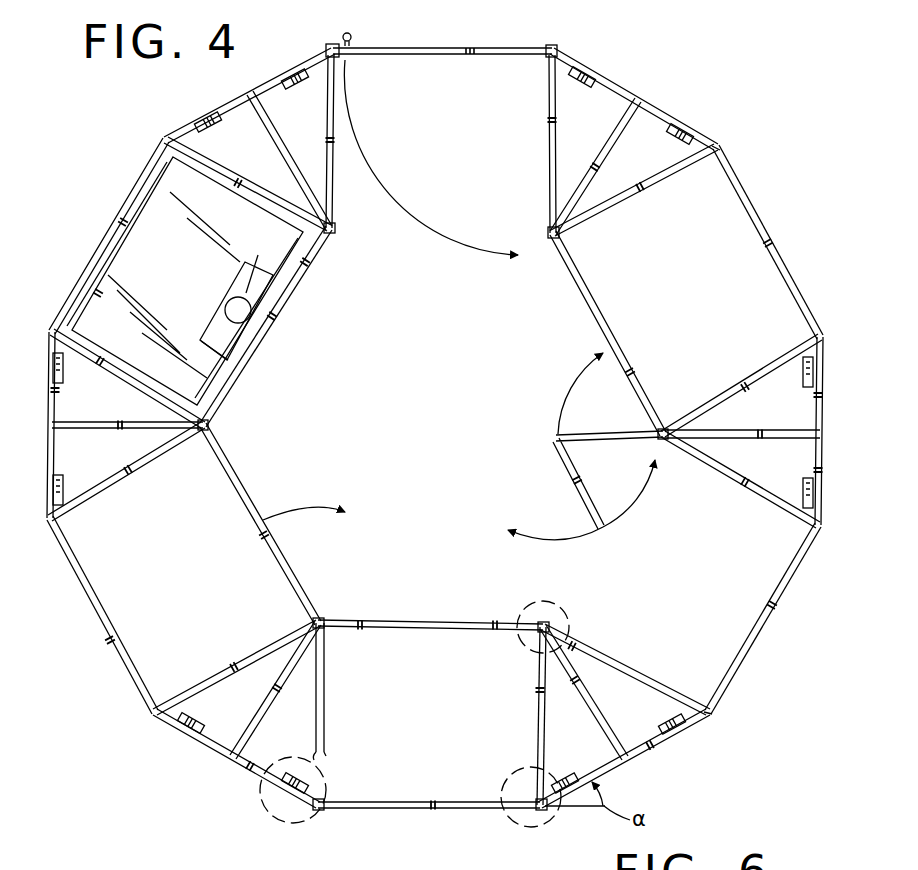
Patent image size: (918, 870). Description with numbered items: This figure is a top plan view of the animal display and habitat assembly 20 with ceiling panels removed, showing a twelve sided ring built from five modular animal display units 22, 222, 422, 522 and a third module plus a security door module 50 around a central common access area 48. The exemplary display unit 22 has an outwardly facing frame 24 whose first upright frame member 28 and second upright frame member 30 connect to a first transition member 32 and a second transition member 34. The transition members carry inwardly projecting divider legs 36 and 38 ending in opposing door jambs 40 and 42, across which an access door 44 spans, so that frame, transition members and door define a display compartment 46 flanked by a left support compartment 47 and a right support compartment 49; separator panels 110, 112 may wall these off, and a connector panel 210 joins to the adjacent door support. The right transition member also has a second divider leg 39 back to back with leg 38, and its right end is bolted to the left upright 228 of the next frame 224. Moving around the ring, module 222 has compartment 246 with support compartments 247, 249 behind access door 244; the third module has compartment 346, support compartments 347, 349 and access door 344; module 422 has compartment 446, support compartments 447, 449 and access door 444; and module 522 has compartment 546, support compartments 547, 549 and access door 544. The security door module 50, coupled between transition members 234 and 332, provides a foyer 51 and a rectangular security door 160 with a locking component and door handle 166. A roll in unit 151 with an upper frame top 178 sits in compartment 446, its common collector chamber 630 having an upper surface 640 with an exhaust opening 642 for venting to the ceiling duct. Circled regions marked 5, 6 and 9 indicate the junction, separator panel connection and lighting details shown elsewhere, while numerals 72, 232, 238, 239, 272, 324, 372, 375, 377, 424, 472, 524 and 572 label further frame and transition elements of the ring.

The animal display and habitat assembly 20 is at (716, 128).
The modular animal display unit 22 is at (422, 778).
The outwardly facing frame 24 is at (480, 810).
The first upright frame member 28 is at (322, 812).
The second upright frame member 30 is at (539, 815).
The first transition member 32 is at (228, 760).
The second transition member 34 is at (627, 768).
The inwardly extending divider leg 36 is at (300, 670).
The first divider leg 38 is at (606, 728).
The second divider leg 39 is at (605, 727).
The door jamb 40 is at (322, 618).
The door jamb 42 is at (538, 642).
The access door 44 is at (400, 620).
The display compartment 46 is at (426, 707).
The left support compartment 47 is at (304, 724).
The common access area 48 is at (434, 409).
The right support compartment 49 is at (553, 708).
The security door module 50 is at (442, 31).
The foyer 51 is at (474, 62).
The frame section 72 is at (360, 801).
The separator panel 110 is at (318, 751).
The separator panel 112 is at (538, 740).
The roll in unit 151 is at (205, 375).
The security door 160 is at (527, 46).
The locking component and door handle 166 is at (347, 30).
The upper frame top 178 is at (158, 233).
The connector panel 210 is at (583, 646).
The display module 222 is at (708, 652).
The frame 224 is at (770, 608).
The left upright 228 is at (711, 718).
The side frame section 232 is at (826, 348).
The transition member 234 is at (645, 95).
The cross strut 238 is at (752, 438).
The cross strut 239 is at (736, 428).
The access door 244 is at (564, 456).
The animal display compartment 246 is at (700, 572).
The left support compartment 247 is at (603, 667).
The right support compartment 249 is at (728, 456).
The frame section 272 is at (797, 558).
The frame section 324 is at (736, 168).
The transition member 332 is at (258, 86).
The access door 344 is at (592, 318).
The animal display compartment 346 is at (700, 305).
The left support compartment 347 is at (718, 392).
The right support compartment 349 is at (610, 188).
The frame section 372 is at (731, 190).
The strut member 375 is at (796, 372).
The bracket 377 is at (806, 365).
The display module 422 is at (82, 330).
The frame section 424 is at (108, 228).
The access door 444 is at (292, 285).
The animal display compartment 446 is at (302, 247).
The left side support compartment 447 is at (238, 116).
The right side support compartment 449 is at (128, 392).
The panel frame 472 is at (173, 163).
The display module 522 is at (124, 592).
The frame section 524 is at (120, 660).
The access door 544 is at (252, 500).
The animal display compartment 546 is at (200, 580).
The left side support compartment 547 is at (128, 452).
The right side support compartment 549 is at (310, 172).
The frame section 572 is at (68, 535).
The common collector chamber 630 is at (222, 318).
The upper surface 640 is at (232, 336).
The exhaust opening 642 is at (252, 262).
The detail circle for FIG. 5 is at (530, 612).
The detail circle for FIG. 6 is at (515, 778).
The detail circle for FIG. 9 is at (262, 790).